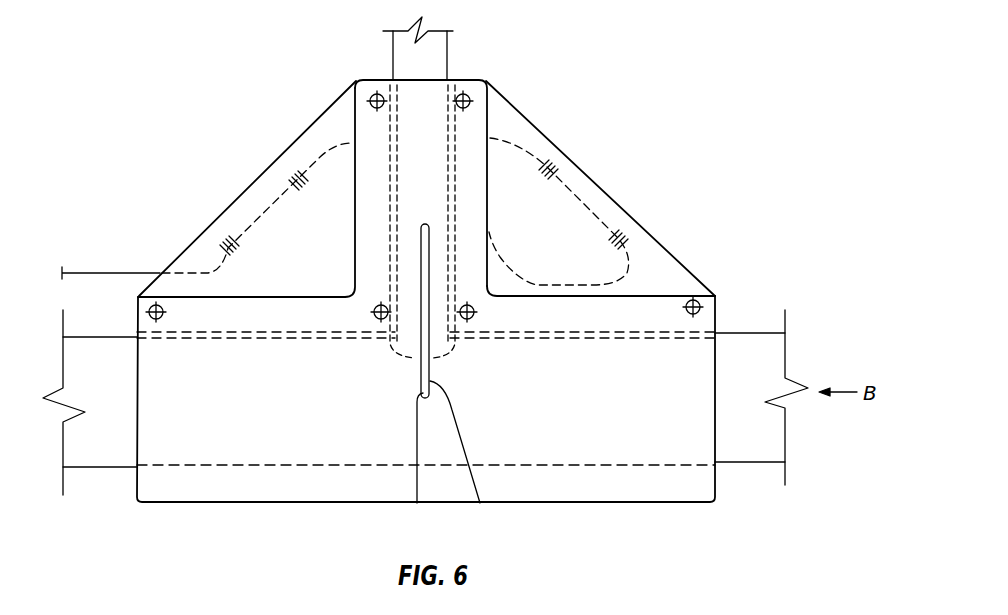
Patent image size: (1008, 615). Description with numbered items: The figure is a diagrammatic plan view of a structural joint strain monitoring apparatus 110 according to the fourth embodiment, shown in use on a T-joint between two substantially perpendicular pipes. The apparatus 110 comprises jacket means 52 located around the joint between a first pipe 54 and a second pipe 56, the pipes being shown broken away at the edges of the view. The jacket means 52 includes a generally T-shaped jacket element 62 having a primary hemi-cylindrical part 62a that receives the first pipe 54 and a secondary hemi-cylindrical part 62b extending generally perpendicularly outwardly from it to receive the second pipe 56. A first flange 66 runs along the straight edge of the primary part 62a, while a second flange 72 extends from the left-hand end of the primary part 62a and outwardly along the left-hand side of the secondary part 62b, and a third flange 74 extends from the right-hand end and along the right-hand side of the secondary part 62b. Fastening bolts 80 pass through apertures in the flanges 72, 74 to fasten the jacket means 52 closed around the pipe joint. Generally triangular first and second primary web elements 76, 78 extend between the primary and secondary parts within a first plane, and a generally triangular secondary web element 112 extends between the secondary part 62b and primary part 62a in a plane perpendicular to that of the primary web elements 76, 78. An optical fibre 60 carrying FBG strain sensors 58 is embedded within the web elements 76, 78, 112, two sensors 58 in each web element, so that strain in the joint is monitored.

The jacket means 52 is at (203, 483).
The first pipe 54 is at (742, 353).
The second pipe 56 is at (437, 62).
The FBG strain sensor 58 is at (293, 184).
The optical fibre 60 is at (140, 273).
The jacket element 62 is at (663, 452).
The primary hemi-cylindrical part 62a is at (552, 451).
The secondary hemi-cylindrical part 62b is at (432, 171).
The first flange 66 is at (333, 483).
The second flange 72 is at (363, 167).
The third flange 74 is at (633, 305).
The first primary web element 76 is at (313, 266).
The second primary web element 78 is at (543, 263).
The fastening bolt 80 is at (373, 98).
The structural joint strain monitoring apparatus 110 is at (676, 56).
The secondary web element 112 is at (477, 503).